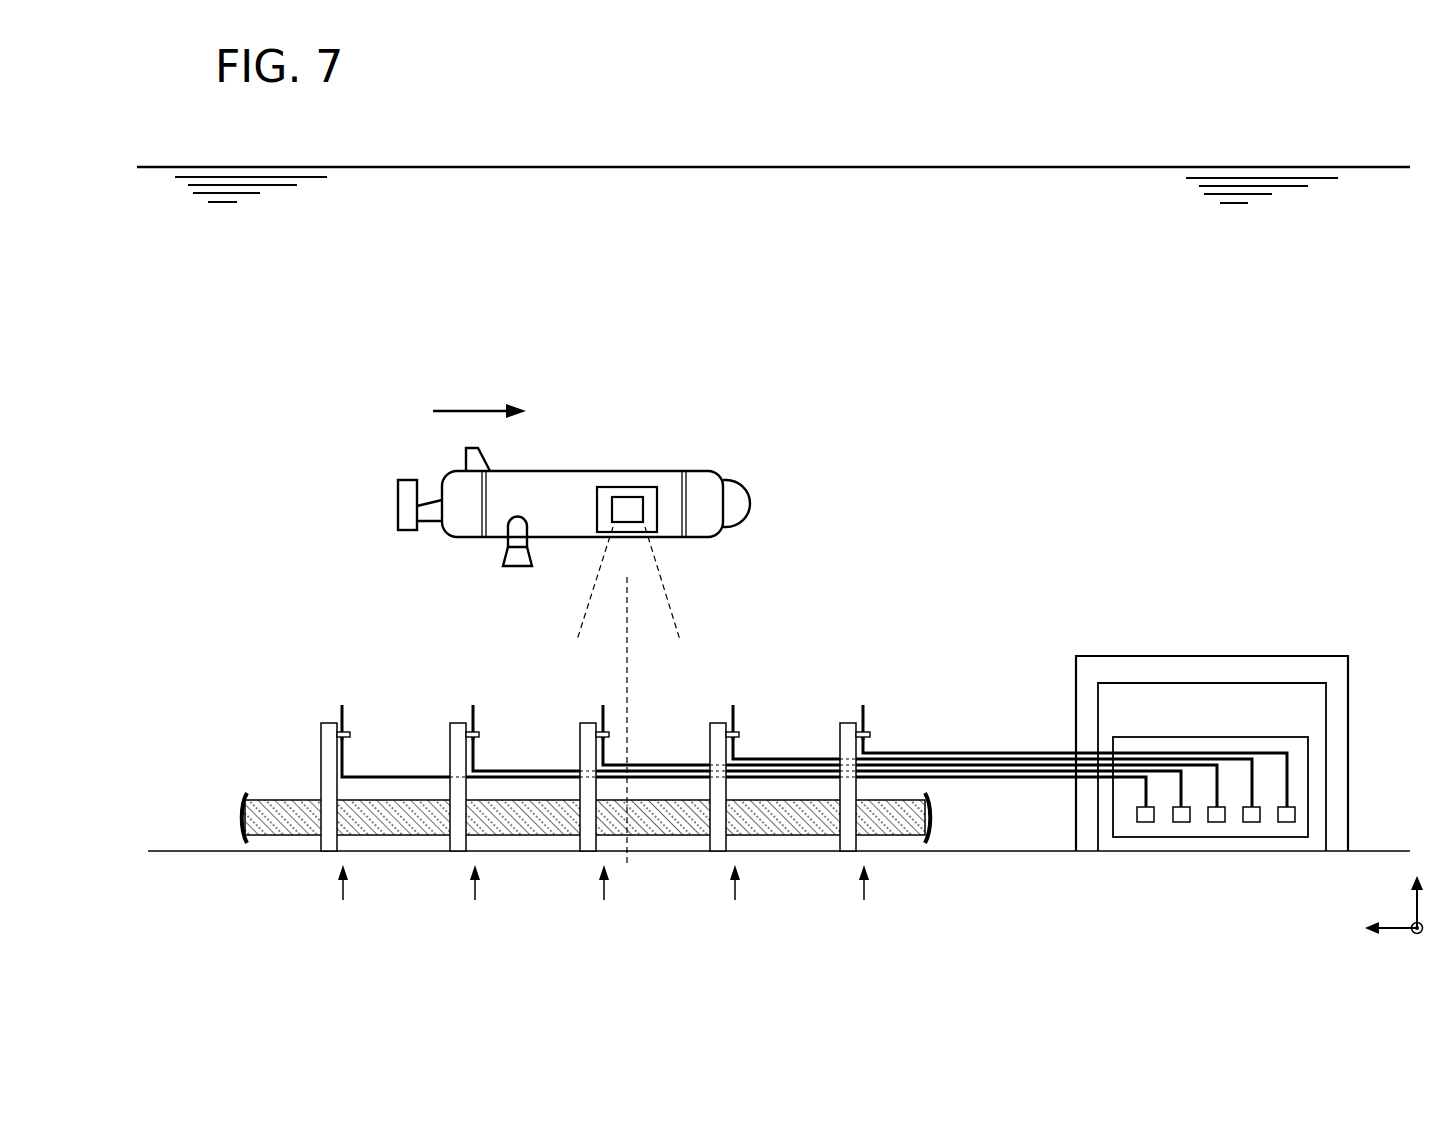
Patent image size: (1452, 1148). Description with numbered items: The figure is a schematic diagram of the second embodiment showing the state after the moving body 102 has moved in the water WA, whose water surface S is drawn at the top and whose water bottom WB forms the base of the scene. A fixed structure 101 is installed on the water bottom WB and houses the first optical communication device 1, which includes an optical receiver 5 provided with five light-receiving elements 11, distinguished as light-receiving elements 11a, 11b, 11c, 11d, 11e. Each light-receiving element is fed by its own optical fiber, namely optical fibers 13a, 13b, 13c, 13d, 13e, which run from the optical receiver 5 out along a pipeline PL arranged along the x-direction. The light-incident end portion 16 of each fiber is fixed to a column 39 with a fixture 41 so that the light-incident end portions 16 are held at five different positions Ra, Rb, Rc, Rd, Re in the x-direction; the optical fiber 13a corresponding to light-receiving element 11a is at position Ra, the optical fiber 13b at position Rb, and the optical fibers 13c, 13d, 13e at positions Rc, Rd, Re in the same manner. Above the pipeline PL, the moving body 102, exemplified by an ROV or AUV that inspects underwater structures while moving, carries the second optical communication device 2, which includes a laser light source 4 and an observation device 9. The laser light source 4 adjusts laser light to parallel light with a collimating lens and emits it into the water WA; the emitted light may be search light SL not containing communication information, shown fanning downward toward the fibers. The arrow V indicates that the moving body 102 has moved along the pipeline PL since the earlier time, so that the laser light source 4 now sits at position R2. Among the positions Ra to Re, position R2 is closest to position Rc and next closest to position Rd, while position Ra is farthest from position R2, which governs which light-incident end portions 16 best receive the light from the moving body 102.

The fixed structure 101 is at (1305, 656).
The first optical communication device 1 is at (1195, 683).
The optical receiver 5 is at (1142, 737).
The light-receiving elements 11 is at (1230, 872).
The light-receiving element 11a is at (1143, 822).
The light-receiving element 11b is at (1180, 822).
The light-receiving element 11c is at (1215, 822).
The light-receiving element 11d is at (1250, 822).
The light-receiving element 11e is at (1309, 852).
The optical fiber 13a is at (400, 777).
The optical fiber 13b is at (523, 771).
The optical fiber 13c is at (660, 765).
The optical fiber 13d is at (788, 759).
The optical fiber 13e is at (955, 753).
The light-incident end portion 16 is at (340, 708).
The column 39 is at (321, 745).
The fixture 41 is at (479, 739).
The moving body 102 is at (738, 436).
The second optical communication device 2 is at (600, 487).
The laser light source 4 is at (628, 497).
The observation device 9 is at (508, 554).
The search light SL is at (676, 601).
The arrow V is at (468, 410).
The water WA is at (834, 190).
The water surface S is at (960, 166).
The water bottom WB is at (181, 850).
The pipeline PL is at (278, 800).
The position R2 is at (637, 735).
The position Ra is at (342, 900).
The position Rb is at (475, 900).
The position Rc is at (603, 900).
The position Rd is at (735, 901).
The position Re is at (863, 901).